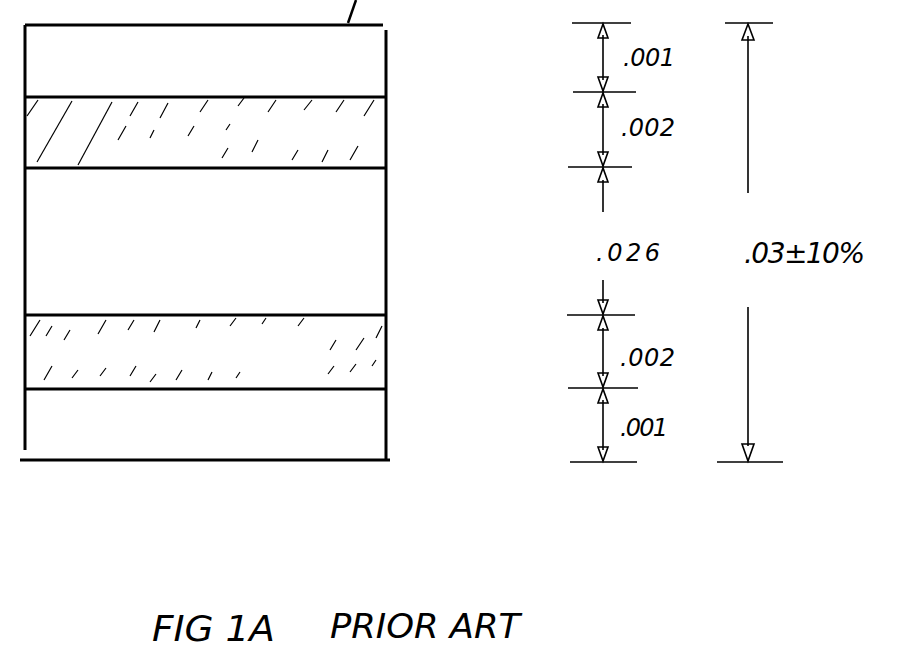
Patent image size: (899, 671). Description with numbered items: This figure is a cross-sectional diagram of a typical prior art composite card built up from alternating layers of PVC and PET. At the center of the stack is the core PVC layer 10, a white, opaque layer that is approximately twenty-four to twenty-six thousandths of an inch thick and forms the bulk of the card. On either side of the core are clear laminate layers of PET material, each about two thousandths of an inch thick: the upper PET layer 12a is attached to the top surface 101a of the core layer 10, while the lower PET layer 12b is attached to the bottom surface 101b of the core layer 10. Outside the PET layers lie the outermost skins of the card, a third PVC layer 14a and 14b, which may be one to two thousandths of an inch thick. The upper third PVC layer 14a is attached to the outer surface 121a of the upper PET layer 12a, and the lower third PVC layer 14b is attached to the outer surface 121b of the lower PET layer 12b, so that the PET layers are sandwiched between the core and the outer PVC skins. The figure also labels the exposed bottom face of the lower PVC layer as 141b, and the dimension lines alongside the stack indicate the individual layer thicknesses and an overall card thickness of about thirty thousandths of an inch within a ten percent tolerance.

The third PVC layer 14a is at (378, 60).
The outer surface of PET layer 121a is at (345, 97).
The clear laminate layer of PET material 12a is at (378, 133).
The top surface of core layer 101a is at (360, 168).
The core PVC layer 10 is at (373, 252).
The bottom surface of core layer 101b is at (370, 316).
The clear laminate layer of PET material 12b is at (378, 358).
The outer surface of PET layer 121b is at (370, 390).
The third PVC layer 14b is at (382, 436).
The bottom surface of lower PVC layer 141b is at (366, 461).